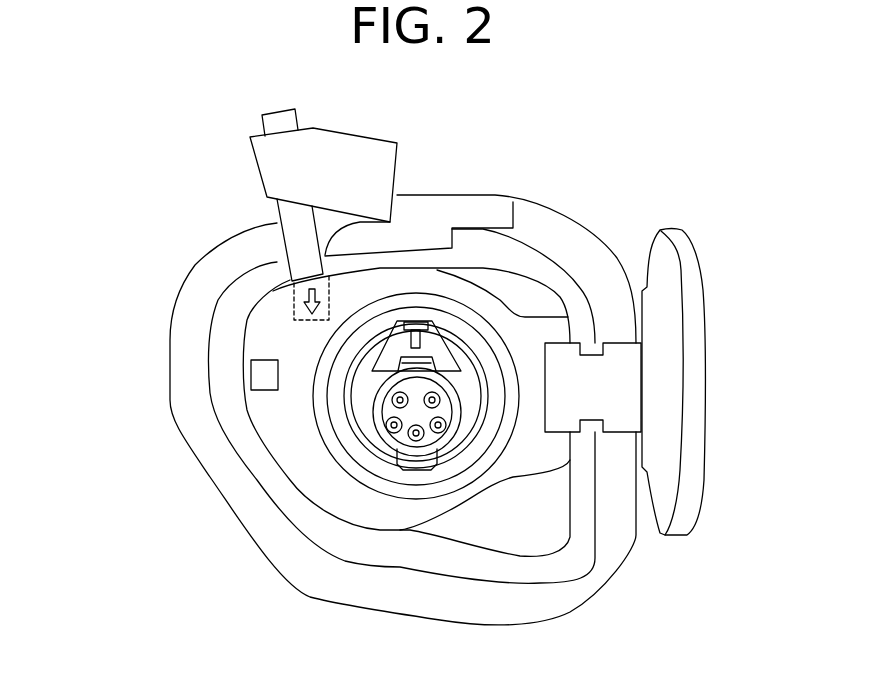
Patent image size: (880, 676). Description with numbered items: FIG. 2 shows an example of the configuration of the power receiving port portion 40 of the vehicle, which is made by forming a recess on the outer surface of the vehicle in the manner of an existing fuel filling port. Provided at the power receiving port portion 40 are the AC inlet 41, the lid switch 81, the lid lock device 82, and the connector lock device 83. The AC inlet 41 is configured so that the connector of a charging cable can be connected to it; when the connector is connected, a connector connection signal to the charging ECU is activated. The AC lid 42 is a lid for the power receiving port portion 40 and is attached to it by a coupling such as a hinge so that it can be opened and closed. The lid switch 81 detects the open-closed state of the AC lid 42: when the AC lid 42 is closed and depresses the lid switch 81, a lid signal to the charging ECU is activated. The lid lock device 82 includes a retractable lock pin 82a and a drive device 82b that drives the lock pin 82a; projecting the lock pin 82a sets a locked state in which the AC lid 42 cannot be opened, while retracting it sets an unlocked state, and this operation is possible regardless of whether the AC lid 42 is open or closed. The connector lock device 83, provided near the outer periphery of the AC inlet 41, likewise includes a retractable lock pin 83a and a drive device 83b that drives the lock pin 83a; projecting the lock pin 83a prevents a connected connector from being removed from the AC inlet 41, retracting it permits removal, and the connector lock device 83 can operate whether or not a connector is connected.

The power receiving port portion 40 is at (567, 220).
The AC inlet 41 is at (373, 415).
The AC lid 42 is at (704, 370).
The lid switch 81 is at (251, 380).
The lid lock device 82 is at (234, 214).
The lock pin 82a is at (298, 243).
The drive device 82b is at (270, 163).
The connector lock device 83 is at (245, 348).
The lock pin 83a is at (410, 342).
The drive device 83b is at (394, 323).